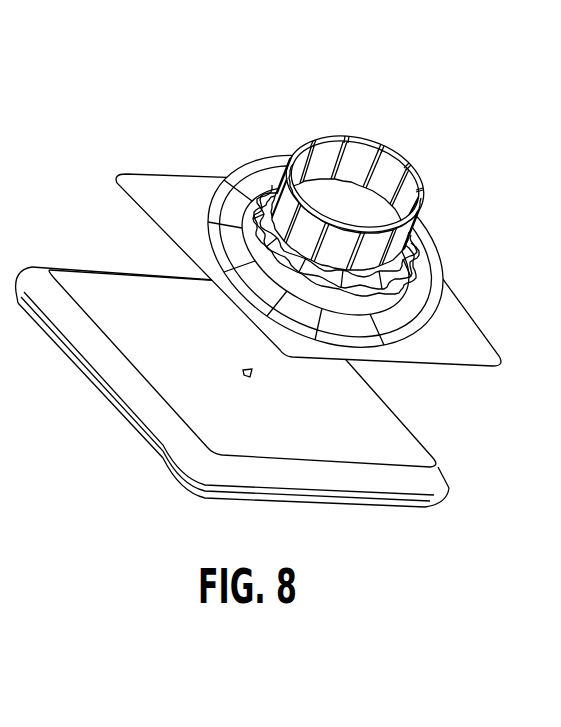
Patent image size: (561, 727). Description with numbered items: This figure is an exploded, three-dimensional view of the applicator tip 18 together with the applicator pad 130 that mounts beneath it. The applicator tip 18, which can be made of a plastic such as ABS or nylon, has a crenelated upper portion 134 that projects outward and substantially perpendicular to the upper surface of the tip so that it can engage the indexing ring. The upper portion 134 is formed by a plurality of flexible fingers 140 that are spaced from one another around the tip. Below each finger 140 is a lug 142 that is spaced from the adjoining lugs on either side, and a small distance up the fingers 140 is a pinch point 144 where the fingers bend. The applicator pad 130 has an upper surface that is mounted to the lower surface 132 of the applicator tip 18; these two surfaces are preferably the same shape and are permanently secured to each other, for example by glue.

The applicator tip 18 is at (393, 152).
The applicator pad 130 is at (382, 433).
The lower surface 132 is at (470, 372).
The crenelated upper portion 134 is at (266, 160).
The flexible fingers 140 is at (368, 162).
The lug 142 is at (253, 220).
The pinch point 144 is at (348, 140).